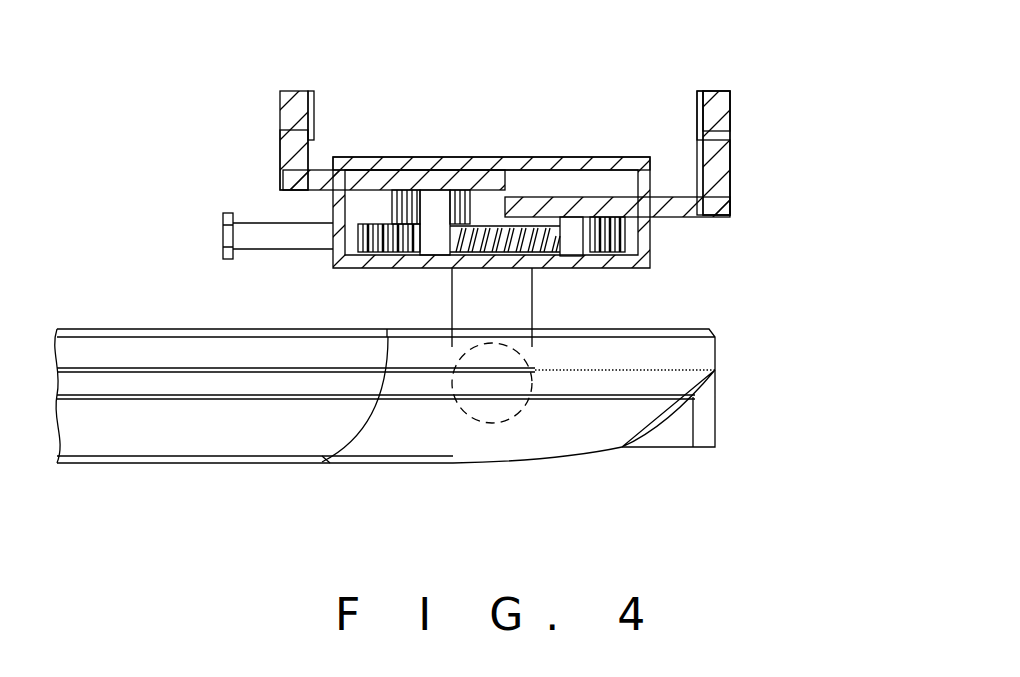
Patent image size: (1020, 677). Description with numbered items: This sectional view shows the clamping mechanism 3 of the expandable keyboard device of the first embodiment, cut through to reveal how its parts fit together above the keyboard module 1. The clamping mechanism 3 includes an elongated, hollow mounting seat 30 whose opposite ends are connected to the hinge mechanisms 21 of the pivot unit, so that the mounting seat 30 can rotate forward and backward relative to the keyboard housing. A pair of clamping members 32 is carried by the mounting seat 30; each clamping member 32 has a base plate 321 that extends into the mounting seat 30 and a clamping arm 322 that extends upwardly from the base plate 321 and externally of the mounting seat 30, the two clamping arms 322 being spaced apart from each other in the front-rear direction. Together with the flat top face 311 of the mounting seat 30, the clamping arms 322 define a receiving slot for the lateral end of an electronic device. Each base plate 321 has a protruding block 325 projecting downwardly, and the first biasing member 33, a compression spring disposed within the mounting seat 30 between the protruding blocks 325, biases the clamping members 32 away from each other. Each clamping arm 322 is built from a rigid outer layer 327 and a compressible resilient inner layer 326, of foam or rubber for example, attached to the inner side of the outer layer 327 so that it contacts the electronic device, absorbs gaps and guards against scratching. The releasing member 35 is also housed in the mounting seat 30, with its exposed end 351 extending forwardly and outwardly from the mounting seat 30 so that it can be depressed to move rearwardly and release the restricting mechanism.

The keyboard module 1 is at (666, 333).
The clamping mechanism 3 is at (733, 216).
The hinge mechanism 21 is at (470, 355).
The mounting seat 30 is at (547, 154).
The clamping member 32 is at (276, 100).
The first biasing member 33 is at (530, 236).
The releasing member 35 is at (231, 214).
The top face 311 is at (480, 157).
The base plate 321 is at (307, 187).
The clamping arm 322 is at (287, 149).
The protruding block 325 is at (421, 255).
The resilient inner layer 326 is at (700, 118).
The rigid outer layer 327 is at (714, 112).
The exposed end 351 is at (222, 236).